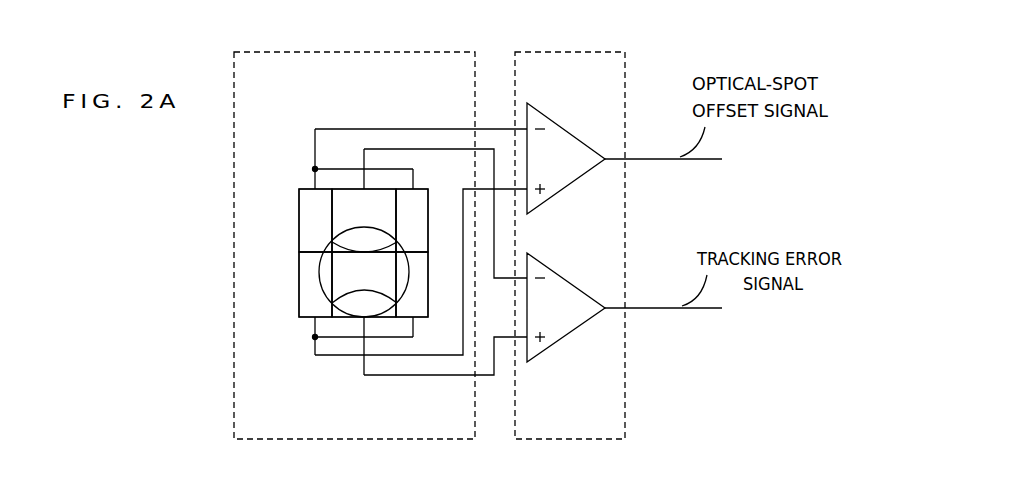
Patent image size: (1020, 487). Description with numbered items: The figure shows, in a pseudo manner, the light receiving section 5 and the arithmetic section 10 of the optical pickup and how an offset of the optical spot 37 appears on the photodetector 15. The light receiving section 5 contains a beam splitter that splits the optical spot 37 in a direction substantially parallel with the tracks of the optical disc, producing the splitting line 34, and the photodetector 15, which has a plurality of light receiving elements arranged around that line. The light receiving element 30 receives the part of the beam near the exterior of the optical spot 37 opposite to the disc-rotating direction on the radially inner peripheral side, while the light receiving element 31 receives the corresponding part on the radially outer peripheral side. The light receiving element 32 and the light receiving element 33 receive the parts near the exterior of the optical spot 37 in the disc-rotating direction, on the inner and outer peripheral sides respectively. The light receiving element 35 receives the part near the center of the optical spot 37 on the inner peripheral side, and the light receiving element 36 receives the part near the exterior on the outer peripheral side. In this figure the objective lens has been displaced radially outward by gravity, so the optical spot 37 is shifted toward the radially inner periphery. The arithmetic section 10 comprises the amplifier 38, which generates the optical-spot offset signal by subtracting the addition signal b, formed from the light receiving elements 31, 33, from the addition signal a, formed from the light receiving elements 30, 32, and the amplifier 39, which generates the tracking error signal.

The light receiving section 5 is at (300, 51).
The arithmetic section 10 is at (553, 51).
The photodetector 15 is at (303, 165).
The light receiving element 30 is at (300, 317).
The light receiving element 31 is at (312, 213).
The light receiving element 32 is at (418, 291).
The light receiving element 33 is at (417, 220).
The splitting line 34 is at (303, 255).
The light receiving element 35 is at (338, 317).
The light receiving element 36 is at (358, 198).
The optical spot 37 is at (318, 273).
The amplifier 38 is at (574, 133).
The amplifier 39 is at (574, 282).
The addition signal a is at (350, 358).
The addition signal b is at (432, 128).